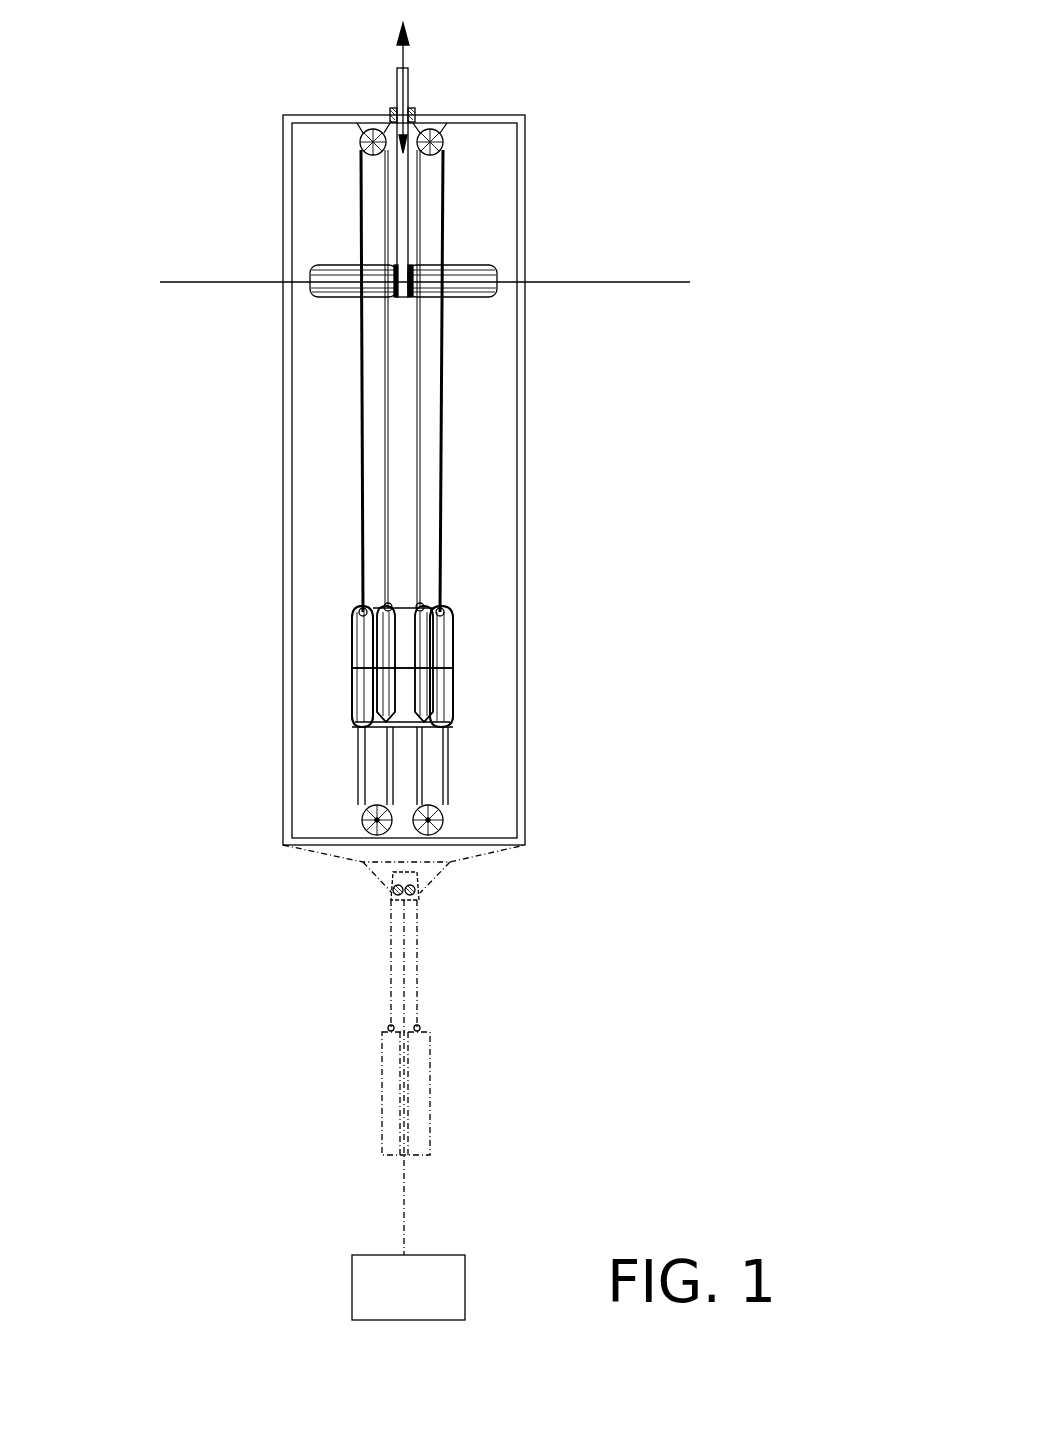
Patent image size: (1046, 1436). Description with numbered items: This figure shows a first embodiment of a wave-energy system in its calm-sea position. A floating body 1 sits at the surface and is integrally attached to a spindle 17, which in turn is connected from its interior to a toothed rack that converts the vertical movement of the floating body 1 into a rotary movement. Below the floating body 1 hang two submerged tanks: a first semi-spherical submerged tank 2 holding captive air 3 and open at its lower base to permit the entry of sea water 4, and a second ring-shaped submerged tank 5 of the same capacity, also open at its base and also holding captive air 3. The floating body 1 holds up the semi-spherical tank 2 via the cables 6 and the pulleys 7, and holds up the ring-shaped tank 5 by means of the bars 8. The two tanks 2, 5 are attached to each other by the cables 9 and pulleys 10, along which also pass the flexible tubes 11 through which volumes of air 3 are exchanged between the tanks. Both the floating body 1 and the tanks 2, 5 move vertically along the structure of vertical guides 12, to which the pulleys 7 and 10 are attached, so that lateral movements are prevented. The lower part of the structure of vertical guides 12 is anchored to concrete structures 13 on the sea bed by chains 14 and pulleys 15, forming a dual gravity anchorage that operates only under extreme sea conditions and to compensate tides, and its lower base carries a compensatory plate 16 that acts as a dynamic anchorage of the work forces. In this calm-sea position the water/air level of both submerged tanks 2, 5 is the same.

The floating body 1 is at (478, 268).
The first semi-spherical submerged tank 2 is at (398, 700).
The captive air 3 is at (447, 635).
The sea water 4 is at (365, 702).
The second ring-shaped submerged tank 5 is at (448, 690).
The cables 6 is at (418, 463).
The pulleys 7 is at (368, 130).
The bars 8 is at (442, 355).
The cables 9 is at (360, 777).
The pulleys 10 is at (420, 835).
The flexible tubes 11 is at (358, 750).
The structure of vertical guides 12 is at (518, 165).
The concrete structures 13 is at (367, 1292).
The chains 14 is at (417, 987).
The pulleys 15 is at (397, 897).
The compensatory plate 16 is at (470, 852).
The spindle 17 is at (403, 196).